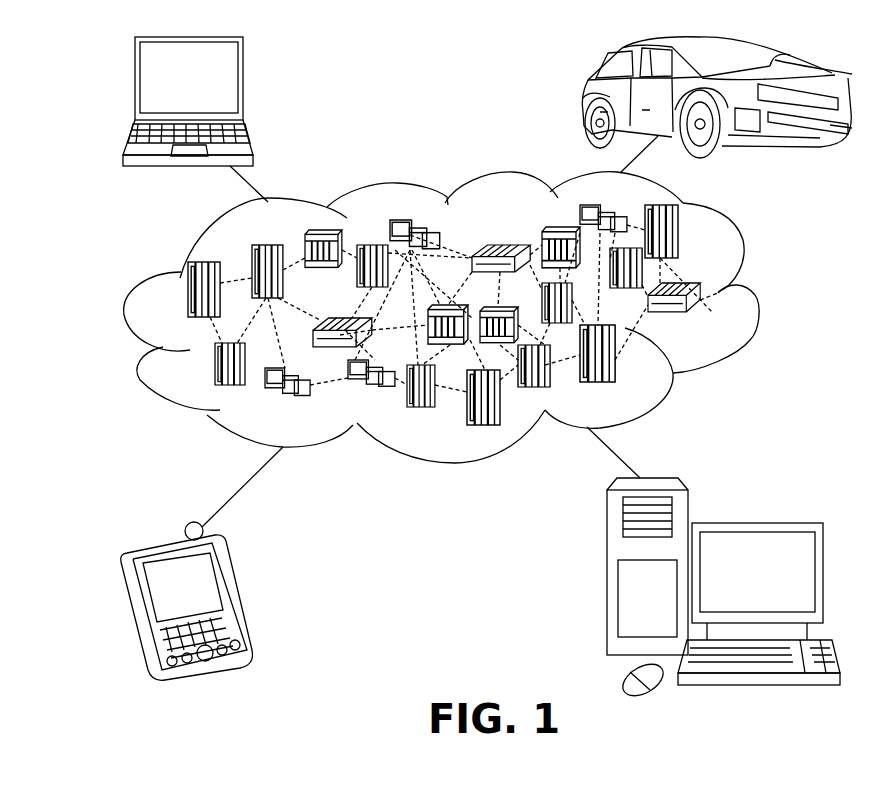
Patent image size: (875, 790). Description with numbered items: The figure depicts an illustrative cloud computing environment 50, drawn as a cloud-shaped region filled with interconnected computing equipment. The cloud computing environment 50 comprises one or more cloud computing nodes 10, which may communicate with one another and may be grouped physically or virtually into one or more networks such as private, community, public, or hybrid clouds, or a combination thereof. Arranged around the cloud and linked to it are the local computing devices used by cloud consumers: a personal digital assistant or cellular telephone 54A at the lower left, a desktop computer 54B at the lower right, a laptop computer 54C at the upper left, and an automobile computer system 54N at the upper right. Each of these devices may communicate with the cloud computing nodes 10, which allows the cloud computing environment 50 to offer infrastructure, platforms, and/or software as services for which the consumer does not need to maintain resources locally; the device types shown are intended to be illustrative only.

The cloud computing nodes 10 is at (708, 319).
The cloud computing environment 50 is at (757, 293).
The personal digital assistant or cellular telephone 54A is at (232, 597).
The desktop computer 54B is at (753, 520).
The laptop computer 54C is at (245, 84).
The automobile computer system 54N is at (585, 97).